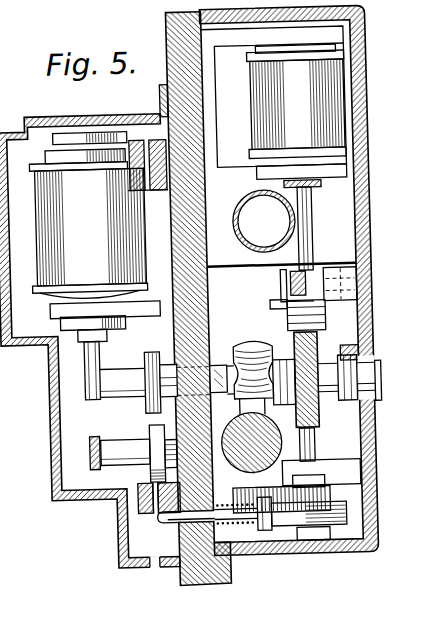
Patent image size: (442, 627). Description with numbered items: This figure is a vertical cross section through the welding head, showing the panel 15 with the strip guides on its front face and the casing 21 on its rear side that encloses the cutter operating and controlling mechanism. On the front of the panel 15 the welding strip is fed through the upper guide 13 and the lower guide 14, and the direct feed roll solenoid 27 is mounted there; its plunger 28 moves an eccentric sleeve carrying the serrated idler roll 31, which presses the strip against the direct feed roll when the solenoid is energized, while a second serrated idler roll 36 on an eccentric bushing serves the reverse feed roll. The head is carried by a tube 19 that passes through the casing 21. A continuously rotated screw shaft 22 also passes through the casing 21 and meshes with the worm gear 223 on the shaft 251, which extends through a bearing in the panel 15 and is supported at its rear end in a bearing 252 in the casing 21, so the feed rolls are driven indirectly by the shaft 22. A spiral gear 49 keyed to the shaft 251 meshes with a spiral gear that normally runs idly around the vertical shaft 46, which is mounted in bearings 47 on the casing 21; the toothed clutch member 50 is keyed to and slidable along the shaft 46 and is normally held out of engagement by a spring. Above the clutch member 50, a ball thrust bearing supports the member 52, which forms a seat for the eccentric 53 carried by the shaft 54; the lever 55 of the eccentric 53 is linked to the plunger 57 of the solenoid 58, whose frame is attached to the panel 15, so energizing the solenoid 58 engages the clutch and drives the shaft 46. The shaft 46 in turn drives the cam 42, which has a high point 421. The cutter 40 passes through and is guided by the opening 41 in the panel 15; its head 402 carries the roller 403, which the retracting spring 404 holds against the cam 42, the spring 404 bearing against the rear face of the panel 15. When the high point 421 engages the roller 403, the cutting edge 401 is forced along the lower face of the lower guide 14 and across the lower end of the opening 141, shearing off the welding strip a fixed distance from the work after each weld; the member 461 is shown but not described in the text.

The panel 15 is at (173, 19).
The upper guide 13 is at (134, 137).
The solenoid 58 is at (274, 95).
The direct feed roll solenoid 27 is at (62, 209).
The tube 19 is at (243, 205).
The plunger 57 is at (315, 227).
The casing 21 is at (365, 244).
The eccentric 53 is at (283, 272).
The lever 55 is at (304, 284).
The shaft 54 is at (338, 300).
The member 52 is at (288, 306).
The stop plate 461 is at (270, 302).
The clutch member 50 is at (298, 341).
The worm gear 223 is at (249, 341).
The bearing 252 is at (344, 357).
The shaft 251 is at (175, 349).
The plunger 28 is at (79, 328).
The idler roll 31 is at (144, 394).
The idler roll 36 is at (152, 434).
The spiral gear 49 is at (360, 401).
The bearings 47 is at (334, 464).
The vertical shaft 46 is at (339, 492).
The screw shaft 22 is at (249, 457).
The lower guide 14 is at (135, 486).
The opening 141 is at (137, 504).
The cutting edge 401 is at (152, 509).
The cutter 40 is at (160, 517).
The opening 41 is at (172, 516).
The retracting spring 404 is at (216, 581).
The head 402 is at (228, 530).
The roller 403 is at (254, 531).
The high point 421 is at (309, 541).
The cam 42 is at (332, 508).